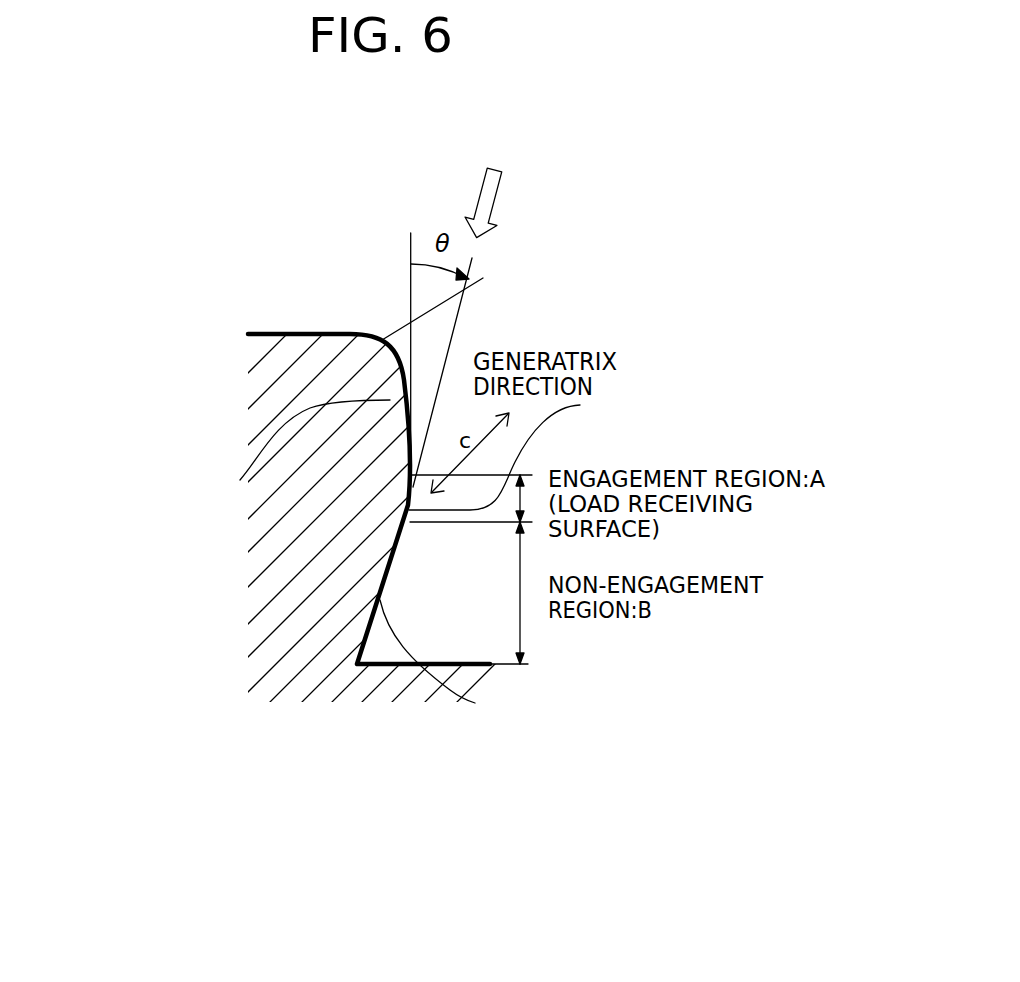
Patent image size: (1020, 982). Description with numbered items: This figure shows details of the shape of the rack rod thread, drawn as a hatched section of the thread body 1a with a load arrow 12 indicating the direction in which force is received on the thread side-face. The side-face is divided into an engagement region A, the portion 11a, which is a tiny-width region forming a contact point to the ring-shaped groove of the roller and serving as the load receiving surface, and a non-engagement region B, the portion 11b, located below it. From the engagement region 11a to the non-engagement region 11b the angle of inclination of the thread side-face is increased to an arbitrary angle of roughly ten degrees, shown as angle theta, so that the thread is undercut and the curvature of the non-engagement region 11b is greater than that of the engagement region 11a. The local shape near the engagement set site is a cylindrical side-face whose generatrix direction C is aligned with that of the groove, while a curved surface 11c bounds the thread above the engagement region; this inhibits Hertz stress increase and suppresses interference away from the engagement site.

The component (workpiece) flange 1a is at (293, 333).
The engagement region 11a is at (580, 405).
The non-engagement region 11b is at (475, 703).
The corner curved surface 11c is at (240, 480).
The load direction 12 is at (504, 202).